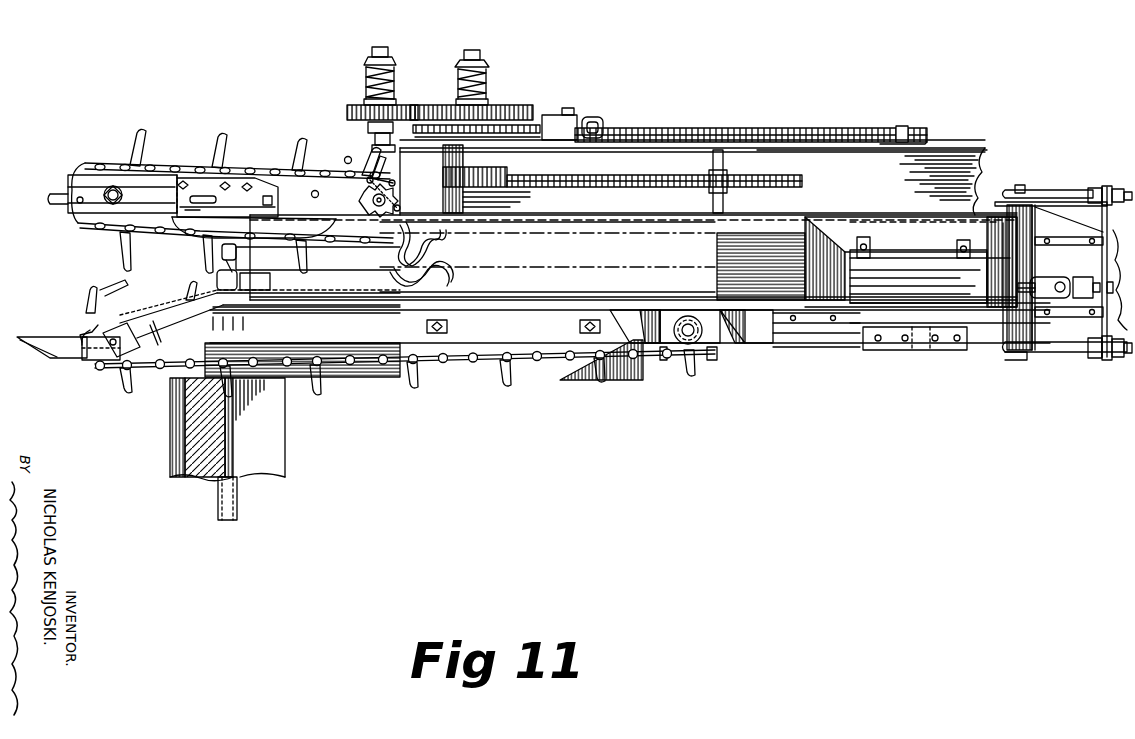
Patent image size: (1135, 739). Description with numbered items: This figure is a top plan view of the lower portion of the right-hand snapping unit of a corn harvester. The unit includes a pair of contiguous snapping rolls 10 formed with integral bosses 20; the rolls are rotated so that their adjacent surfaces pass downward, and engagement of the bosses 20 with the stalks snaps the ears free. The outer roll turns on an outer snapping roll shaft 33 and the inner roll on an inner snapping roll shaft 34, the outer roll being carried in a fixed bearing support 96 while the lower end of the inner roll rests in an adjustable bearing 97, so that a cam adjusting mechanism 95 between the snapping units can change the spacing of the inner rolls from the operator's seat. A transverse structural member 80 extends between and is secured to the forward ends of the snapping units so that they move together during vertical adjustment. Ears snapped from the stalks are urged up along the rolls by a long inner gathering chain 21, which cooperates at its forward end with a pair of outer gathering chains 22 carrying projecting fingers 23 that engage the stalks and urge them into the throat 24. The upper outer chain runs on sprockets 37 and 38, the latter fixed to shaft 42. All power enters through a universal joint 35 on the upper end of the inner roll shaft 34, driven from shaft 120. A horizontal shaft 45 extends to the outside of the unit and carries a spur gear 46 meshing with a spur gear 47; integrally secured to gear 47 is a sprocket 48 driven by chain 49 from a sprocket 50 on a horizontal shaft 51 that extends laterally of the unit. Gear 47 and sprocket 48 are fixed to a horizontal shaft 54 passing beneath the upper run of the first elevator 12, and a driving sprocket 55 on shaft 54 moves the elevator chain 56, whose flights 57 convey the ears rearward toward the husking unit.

The snapping rolls 10 is at (583, 259).
The first elevator 12 is at (880, 189).
The integral bosses 20 is at (420, 240).
The inner gathering chain 21 is at (463, 360).
The outer gathering chains 22 is at (170, 158).
The projecting fingers 23 is at (120, 250).
The throat 24 is at (165, 280).
The outer snapping roll shaft 33 is at (773, 258).
The inner snapping roll shaft 34 is at (777, 287).
The universal joint 35 is at (1073, 298).
The sprocket 37 is at (119, 167).
The sprocket 38 is at (370, 202).
The shaft 42 is at (370, 176).
The horizontal shaft 45 is at (383, 47).
The spur gear 46 is at (347, 112).
The spur gear 47 is at (510, 111).
The sprocket 48 is at (428, 124).
The chain 49 is at (640, 130).
The sprocket 50 is at (917, 131).
The horizontal shaft 51 is at (902, 126).
The horizontal shaft 54 is at (472, 50).
The driving sprocket 55 is at (487, 168).
The chain 56 is at (753, 178).
The flights 57 is at (717, 160).
The transverse structural member 80 is at (228, 497).
The cam adjusting mechanism 95 is at (252, 486).
The fixed bearing support 96 is at (230, 233).
The adjustable bearing 97 is at (213, 300).
The shaft 120 is at (1123, 304).